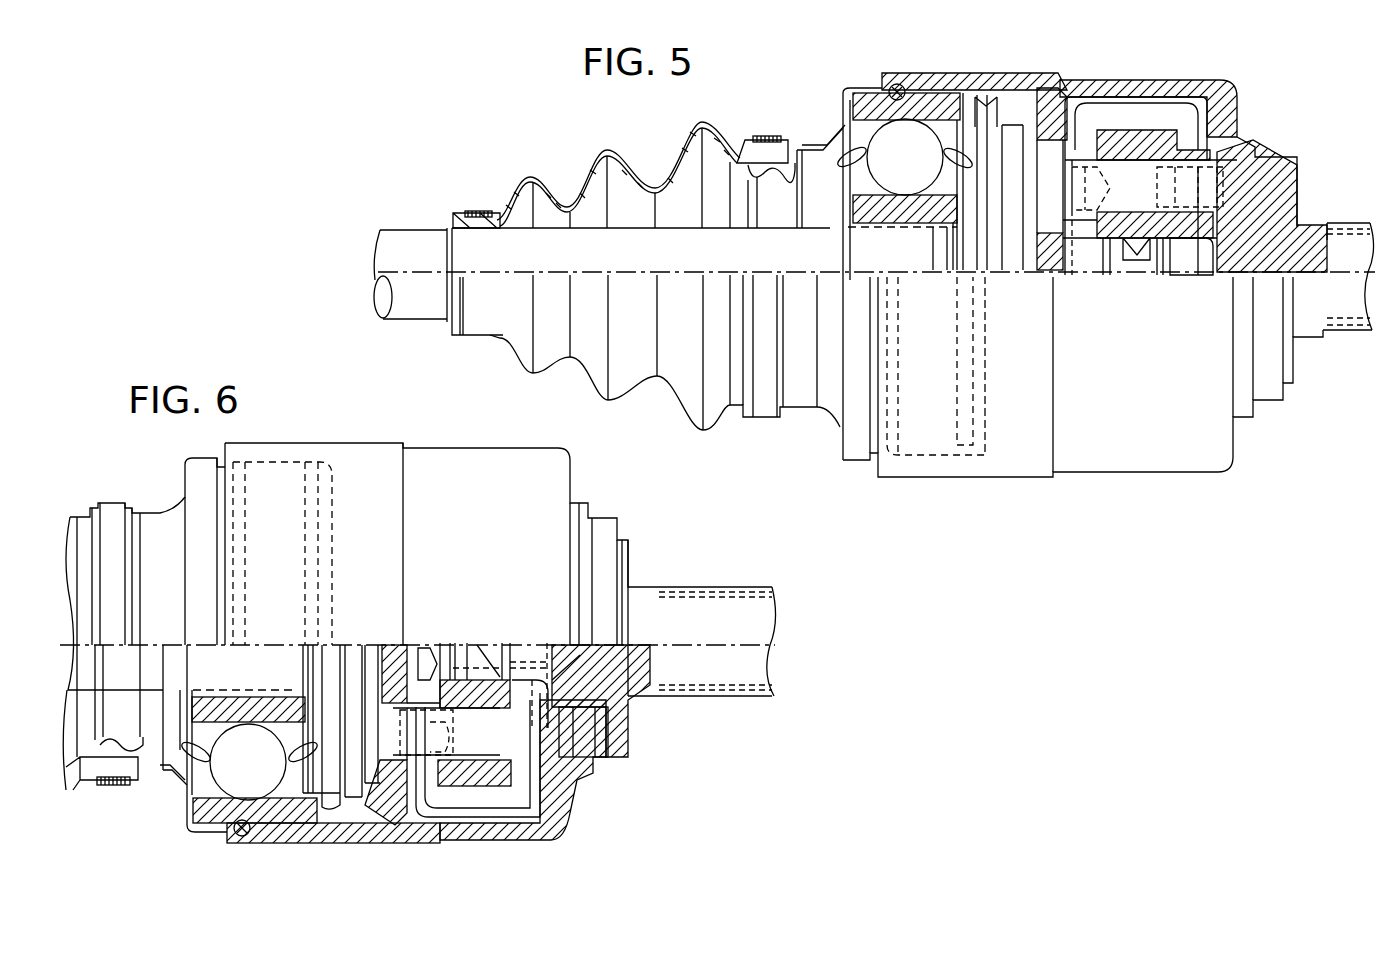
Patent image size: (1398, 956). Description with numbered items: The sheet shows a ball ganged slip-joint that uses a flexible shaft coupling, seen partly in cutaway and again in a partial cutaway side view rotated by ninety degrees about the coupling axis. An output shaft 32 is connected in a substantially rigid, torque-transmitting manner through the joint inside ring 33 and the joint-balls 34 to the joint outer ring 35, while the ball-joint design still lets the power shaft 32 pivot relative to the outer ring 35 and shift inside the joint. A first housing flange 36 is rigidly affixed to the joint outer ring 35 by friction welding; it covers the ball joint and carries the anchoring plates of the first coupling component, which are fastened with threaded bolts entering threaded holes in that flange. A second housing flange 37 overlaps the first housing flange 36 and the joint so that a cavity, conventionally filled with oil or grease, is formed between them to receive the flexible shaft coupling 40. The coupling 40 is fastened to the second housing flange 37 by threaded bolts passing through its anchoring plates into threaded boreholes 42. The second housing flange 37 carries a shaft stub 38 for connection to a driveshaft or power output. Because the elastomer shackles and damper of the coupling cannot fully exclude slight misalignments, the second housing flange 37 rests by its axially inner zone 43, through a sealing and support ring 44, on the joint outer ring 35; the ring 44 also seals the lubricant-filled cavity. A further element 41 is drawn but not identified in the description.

In FIG. 5, the output shaft 32 is at (420, 250).
In FIG. 5, the joint inside ring 33 is at (860, 217).
In FIG. 5, the joint-balls 34 is at (885, 147).
In FIG. 5, the joint outer ring 35 is at (923, 110).
In FIG. 5, the first housing flange 36 is at (1043, 123).
In FIG. 6, the first housing flange 36 is at (357, 803).
In FIG. 5, the second housing flange 37 is at (1223, 108).
In FIG. 6, the second housing flange 37 is at (551, 806).
In FIG. 5, the shaft stub 38 is at (1337, 317).
In FIG. 5, the flexible shaft coupling 40 is at (1160, 124).
In FIG. 6, the flexible shaft coupling 40 is at (489, 797).
In FIG. 5, the hub 41 is at (1118, 177).
In FIG. 5, the threaded boreholes 42 is at (1235, 182).
In FIG. 5, the axially inner zone 43 is at (923, 80).
In FIG. 5, the sealing and support ring 44 is at (890, 93).